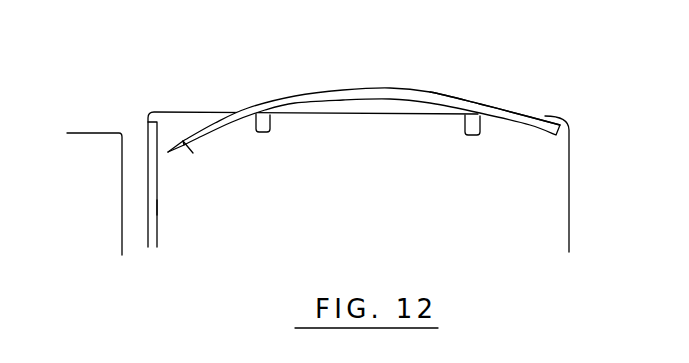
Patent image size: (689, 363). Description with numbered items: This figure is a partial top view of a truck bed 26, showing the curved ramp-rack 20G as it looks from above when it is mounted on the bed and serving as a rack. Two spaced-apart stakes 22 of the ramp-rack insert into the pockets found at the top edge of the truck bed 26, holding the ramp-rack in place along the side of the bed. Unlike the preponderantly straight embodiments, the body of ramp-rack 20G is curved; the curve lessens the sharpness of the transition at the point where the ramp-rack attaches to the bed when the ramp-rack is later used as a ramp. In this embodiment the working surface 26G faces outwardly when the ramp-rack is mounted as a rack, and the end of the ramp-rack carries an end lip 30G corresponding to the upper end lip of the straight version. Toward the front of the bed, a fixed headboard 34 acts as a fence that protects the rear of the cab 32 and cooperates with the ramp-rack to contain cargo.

The curved ramp-rack 20G is at (343, 73).
The stake 22 is at (270, 134).
The truck bed 26 is at (182, 112).
The working surface 26G is at (445, 91).
The end of spring member 30G is at (175, 155).
The cab 32 is at (82, 127).
The fixed headboard 34 is at (160, 210).